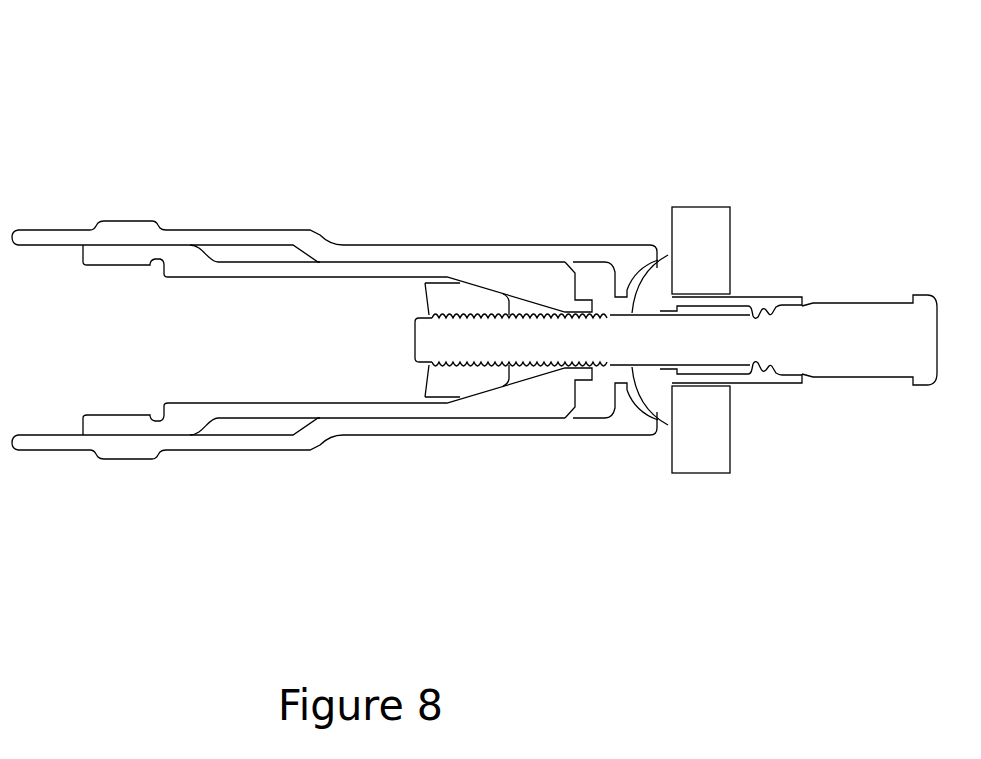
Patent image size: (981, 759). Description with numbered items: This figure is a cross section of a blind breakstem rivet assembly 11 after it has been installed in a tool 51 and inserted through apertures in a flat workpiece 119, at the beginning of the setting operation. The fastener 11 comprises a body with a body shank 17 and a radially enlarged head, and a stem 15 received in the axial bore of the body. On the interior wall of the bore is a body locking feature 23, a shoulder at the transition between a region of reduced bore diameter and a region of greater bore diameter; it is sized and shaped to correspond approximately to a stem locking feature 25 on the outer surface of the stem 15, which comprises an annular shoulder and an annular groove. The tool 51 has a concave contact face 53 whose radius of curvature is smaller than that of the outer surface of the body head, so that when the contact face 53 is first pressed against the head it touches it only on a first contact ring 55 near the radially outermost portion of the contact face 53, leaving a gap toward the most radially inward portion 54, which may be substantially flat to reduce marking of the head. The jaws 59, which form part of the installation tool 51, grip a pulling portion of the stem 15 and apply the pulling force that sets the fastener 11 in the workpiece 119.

The blind breakstem rivet assembly 11 is at (818, 141).
The jaws 59 is at (578, 258).
The tool 51 is at (447, 437).
The stem 15 is at (405, 344).
The most radially inward portion 54 is at (612, 392).
The contact face 53 is at (633, 402).
The first contact ring 55 is at (653, 417).
The flat workpiece 119 is at (700, 475).
The body locking feature 23 is at (733, 306).
The stem locking feature 25 is at (778, 368).
The body shank 17 is at (758, 296).